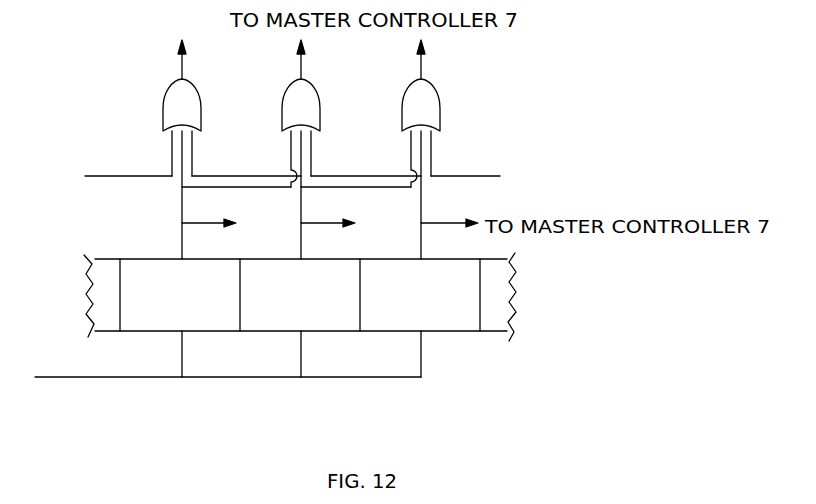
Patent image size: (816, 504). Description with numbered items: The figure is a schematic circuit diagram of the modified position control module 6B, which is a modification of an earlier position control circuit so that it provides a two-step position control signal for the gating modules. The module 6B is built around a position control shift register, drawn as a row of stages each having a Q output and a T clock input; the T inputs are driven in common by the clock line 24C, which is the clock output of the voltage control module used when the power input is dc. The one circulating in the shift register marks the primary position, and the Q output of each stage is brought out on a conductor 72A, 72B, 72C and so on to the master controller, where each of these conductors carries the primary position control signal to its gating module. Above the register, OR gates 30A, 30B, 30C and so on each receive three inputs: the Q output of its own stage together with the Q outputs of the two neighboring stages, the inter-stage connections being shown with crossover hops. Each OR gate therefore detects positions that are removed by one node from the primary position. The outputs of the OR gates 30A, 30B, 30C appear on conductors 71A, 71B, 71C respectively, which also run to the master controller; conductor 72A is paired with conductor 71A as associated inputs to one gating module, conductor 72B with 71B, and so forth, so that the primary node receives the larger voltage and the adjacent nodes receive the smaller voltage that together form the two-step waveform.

The OR gate 30A is at (201, 100).
The OR gate 30B is at (320, 100).
The OR gate 30C is at (440, 100).
The conductor 71A is at (186, 62).
The conductor 71B is at (305, 62).
The conductor 71C is at (425, 62).
The conductor 72A is at (195, 221).
The conductor 72B is at (314, 221).
The conductor 72C is at (434, 221).
The position control module 6B is at (530, 336).
The clock output 24C is at (138, 378).